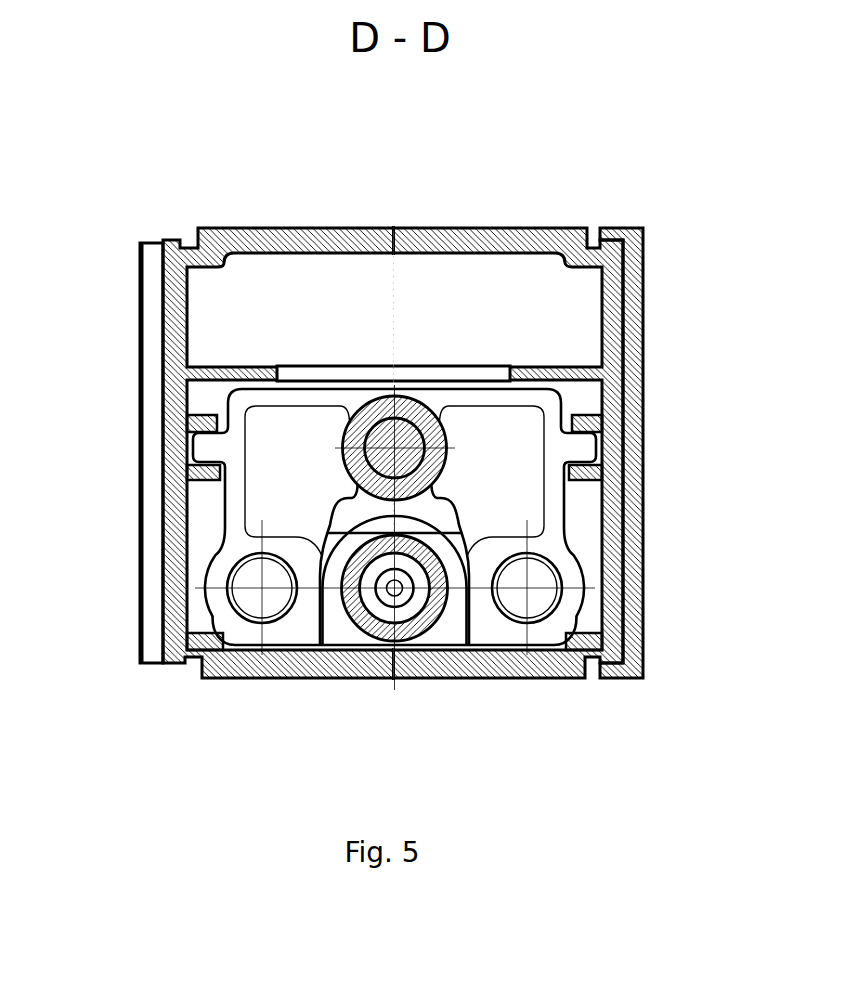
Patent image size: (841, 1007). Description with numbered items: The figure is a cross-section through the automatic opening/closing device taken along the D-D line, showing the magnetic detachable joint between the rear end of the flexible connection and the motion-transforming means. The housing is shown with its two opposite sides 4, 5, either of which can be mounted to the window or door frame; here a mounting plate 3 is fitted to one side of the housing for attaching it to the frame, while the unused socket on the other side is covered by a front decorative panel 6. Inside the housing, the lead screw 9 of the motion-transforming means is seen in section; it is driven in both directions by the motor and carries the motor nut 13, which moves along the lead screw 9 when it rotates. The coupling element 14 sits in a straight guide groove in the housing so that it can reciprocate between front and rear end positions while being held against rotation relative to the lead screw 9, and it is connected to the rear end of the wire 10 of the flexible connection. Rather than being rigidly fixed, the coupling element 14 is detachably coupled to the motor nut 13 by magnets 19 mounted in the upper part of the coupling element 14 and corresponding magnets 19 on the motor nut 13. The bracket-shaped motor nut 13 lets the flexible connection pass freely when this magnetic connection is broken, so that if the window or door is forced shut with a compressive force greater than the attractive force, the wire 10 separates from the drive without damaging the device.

The mounting plate 3 is at (141, 313).
The side of the housing unit 4 is at (297, 677).
The opposite side of the housing 5 is at (538, 677).
The front decorative panel 6 is at (640, 306).
The lead screw 9 is at (410, 448).
The wire 10 is at (390, 588).
The motor nut 13 is at (226, 537).
The coupling element 14 is at (355, 548).
The magnets 19 is at (262, 588).